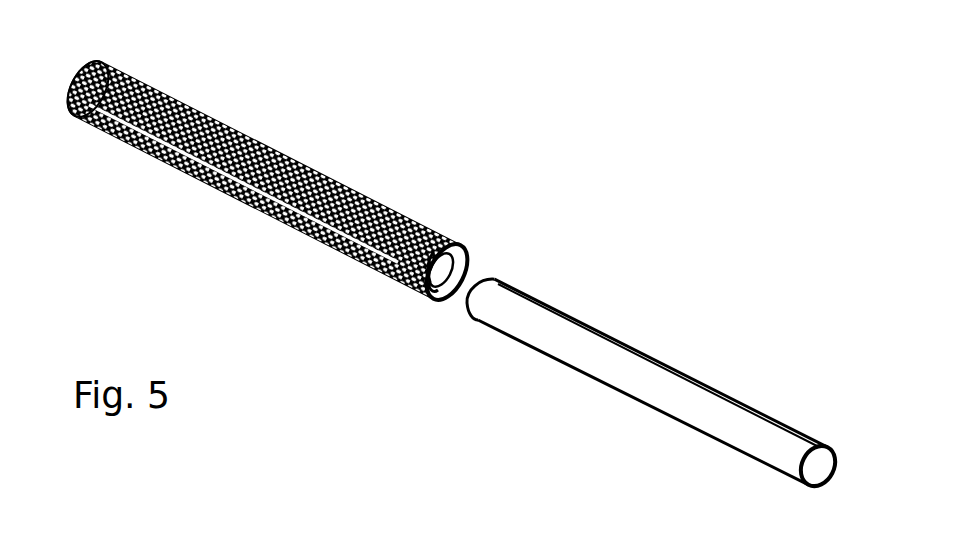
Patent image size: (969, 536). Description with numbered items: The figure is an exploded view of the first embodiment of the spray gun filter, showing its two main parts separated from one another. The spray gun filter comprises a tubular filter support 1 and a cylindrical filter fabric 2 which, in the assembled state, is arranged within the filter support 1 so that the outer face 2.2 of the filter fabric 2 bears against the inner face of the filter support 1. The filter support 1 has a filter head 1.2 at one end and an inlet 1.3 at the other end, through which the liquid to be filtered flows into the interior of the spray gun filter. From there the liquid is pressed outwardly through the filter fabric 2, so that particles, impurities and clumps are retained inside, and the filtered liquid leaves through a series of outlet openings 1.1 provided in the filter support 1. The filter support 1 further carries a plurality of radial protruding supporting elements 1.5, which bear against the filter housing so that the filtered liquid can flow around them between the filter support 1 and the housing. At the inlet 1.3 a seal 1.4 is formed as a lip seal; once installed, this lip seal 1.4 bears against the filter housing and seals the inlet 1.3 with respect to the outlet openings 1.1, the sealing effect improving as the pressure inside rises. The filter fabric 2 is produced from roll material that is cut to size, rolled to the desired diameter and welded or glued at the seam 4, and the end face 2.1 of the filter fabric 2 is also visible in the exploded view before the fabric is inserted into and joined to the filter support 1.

The filter support 1 is at (282, 189).
The outlet openings 1.1 is at (268, 180).
The filter head 1.2 is at (87, 68).
The inlet 1.3 is at (462, 257).
The lip seal 1.4 is at (418, 307).
The radial protruding supporting elements 1.5 is at (243, 184).
The filter fabric 2 is at (656, 394).
The rod end face 2.1 is at (820, 463).
The outer face of the filter fabric 2.2 is at (643, 418).
The seam 4 is at (660, 360).